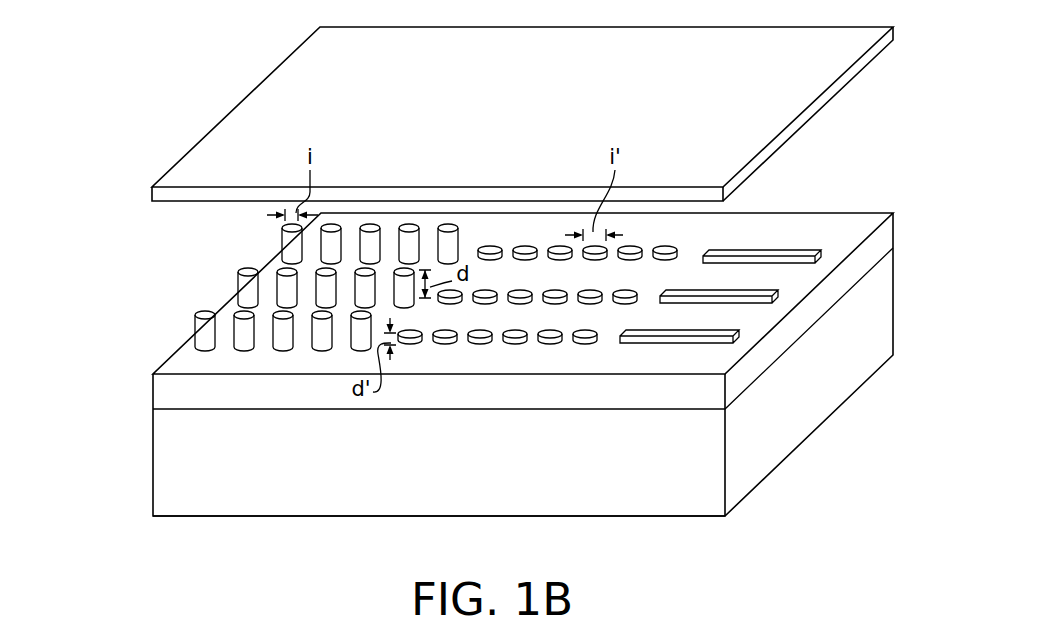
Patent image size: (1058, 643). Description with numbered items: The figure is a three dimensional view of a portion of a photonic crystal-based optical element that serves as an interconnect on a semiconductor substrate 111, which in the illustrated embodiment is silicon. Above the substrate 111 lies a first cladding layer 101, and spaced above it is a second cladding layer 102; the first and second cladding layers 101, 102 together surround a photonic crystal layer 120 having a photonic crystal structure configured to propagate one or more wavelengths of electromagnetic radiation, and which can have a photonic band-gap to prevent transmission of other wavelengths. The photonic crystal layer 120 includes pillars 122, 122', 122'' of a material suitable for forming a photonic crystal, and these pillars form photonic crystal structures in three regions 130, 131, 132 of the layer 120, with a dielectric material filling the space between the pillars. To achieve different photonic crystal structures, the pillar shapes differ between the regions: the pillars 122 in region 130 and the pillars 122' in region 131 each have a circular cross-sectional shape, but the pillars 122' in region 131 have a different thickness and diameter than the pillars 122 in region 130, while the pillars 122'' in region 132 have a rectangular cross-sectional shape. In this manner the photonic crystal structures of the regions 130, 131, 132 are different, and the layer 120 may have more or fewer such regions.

The second cladding layer 102 is at (510, 136).
The first cladding layer 101 is at (208, 403).
The semiconductor substrate 111 is at (208, 497).
The photonic crystal layer 120 is at (487, 364).
The pillars 122 is at (325, 283).
The pillars 122' is at (537, 282).
The pillars 122'' is at (720, 281).
The region 130 is at (325, 337).
The region 131 is at (537, 343).
The region 132 is at (849, 191).